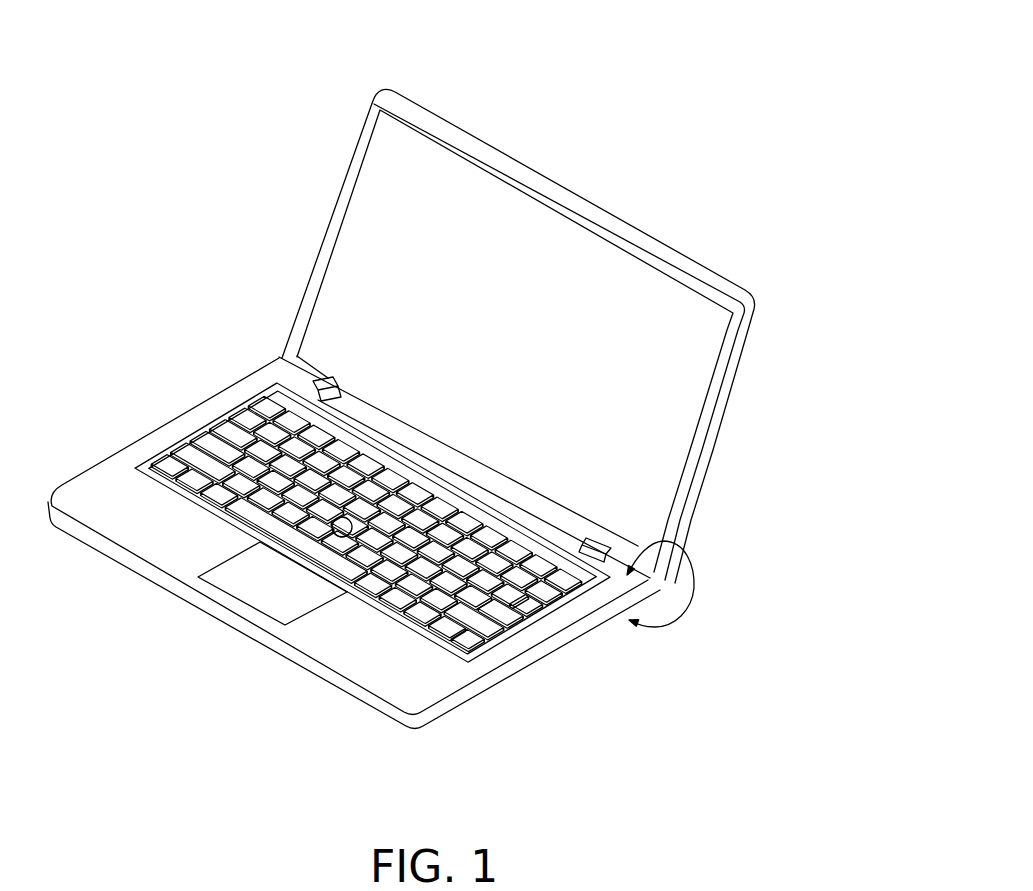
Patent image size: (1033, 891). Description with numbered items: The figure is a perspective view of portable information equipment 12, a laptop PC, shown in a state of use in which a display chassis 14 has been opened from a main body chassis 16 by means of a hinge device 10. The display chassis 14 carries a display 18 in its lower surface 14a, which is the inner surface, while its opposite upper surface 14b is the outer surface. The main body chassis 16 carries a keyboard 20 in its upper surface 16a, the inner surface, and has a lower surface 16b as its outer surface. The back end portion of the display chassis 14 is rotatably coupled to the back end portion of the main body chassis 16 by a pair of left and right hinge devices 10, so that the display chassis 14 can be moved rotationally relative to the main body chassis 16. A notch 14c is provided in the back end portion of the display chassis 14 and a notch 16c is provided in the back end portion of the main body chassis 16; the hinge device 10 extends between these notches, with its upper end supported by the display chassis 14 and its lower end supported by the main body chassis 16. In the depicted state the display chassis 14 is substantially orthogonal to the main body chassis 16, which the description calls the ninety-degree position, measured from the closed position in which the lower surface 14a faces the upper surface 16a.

The hinge device 10 is at (600, 547).
The portable information equipment 12 is at (213, 45).
The display chassis 14 is at (668, 250).
The lower surface (inner surface) of the display chassis 14a is at (705, 432).
The upper surface (outer surface) of the display chassis 14b is at (736, 394).
The notch 14c is at (325, 382).
The main body chassis 16 is at (99, 462).
The upper surface (inner surface) of the main body chassis 16a is at (98, 522).
The lower surface (outer surface) of the main body chassis 16b is at (130, 575).
The notch 16c is at (350, 390).
The display 18 is at (466, 190).
The keyboard 20 is at (213, 432).